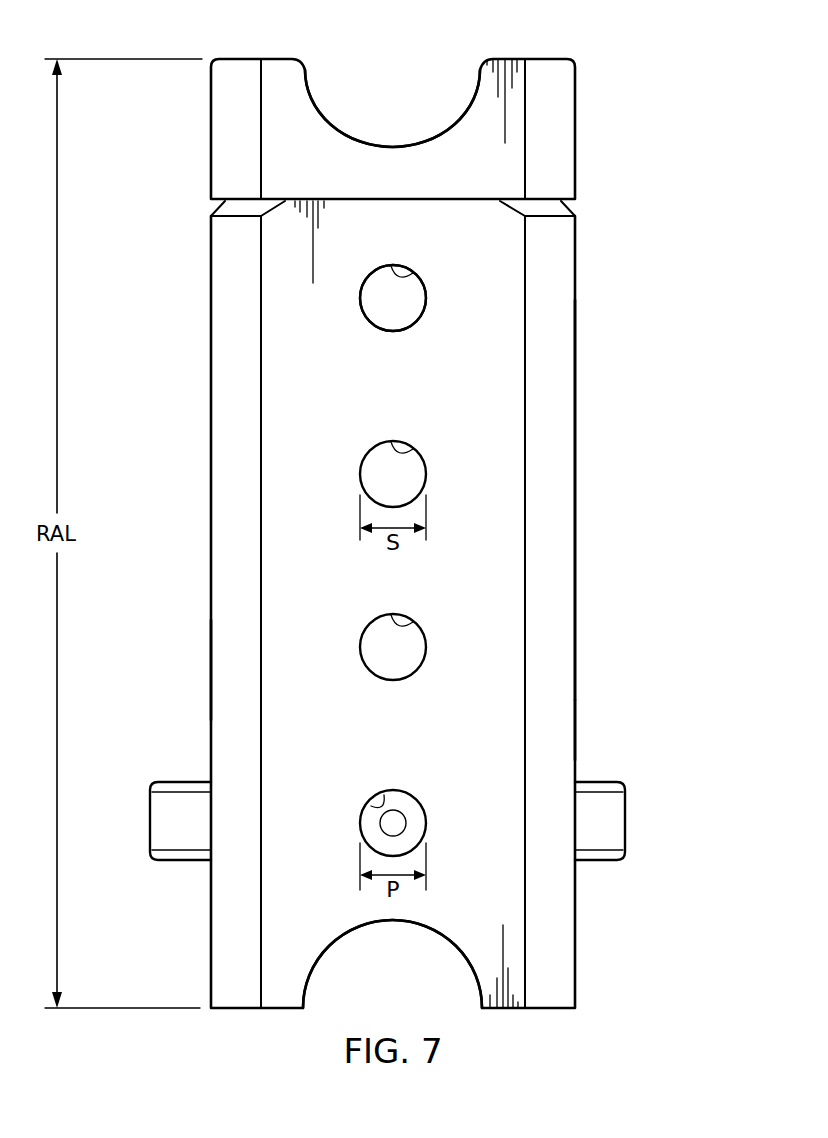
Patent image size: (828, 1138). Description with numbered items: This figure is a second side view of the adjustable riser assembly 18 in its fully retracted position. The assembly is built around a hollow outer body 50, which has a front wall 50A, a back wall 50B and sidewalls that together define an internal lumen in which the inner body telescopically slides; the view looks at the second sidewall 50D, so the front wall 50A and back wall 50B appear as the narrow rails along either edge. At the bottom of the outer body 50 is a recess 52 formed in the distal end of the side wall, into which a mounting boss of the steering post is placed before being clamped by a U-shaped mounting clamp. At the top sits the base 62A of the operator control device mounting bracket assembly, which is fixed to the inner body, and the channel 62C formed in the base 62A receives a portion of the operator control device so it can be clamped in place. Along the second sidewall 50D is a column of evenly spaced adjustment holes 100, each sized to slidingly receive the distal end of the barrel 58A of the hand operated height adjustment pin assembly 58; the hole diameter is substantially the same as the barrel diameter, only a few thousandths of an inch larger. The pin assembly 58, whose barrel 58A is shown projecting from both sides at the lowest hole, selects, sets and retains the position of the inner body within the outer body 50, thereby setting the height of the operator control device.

The adjustable riser assembly 18 is at (642, 190).
The hollow outer body 50 is at (585, 576).
The front wall 50A is at (575, 483).
The back wall 50B is at (212, 667).
The second sidewall 50D is at (567, 723).
The recesses 52 is at (374, 921).
The hand operated height adjustment pin assembly 58 is at (143, 819).
The barrel 58A is at (398, 818).
The base 62A is at (552, 59).
The channel 62C is at (387, 146).
The adjustment holes 100 is at (410, 273).